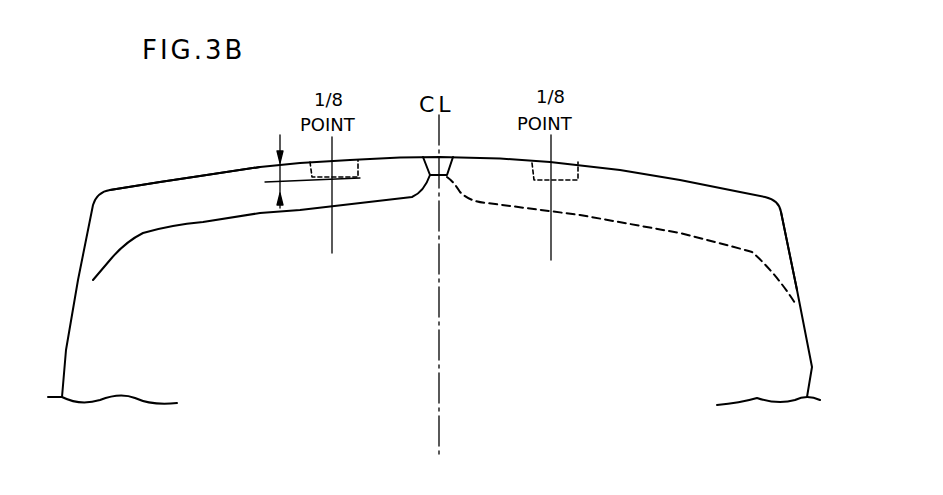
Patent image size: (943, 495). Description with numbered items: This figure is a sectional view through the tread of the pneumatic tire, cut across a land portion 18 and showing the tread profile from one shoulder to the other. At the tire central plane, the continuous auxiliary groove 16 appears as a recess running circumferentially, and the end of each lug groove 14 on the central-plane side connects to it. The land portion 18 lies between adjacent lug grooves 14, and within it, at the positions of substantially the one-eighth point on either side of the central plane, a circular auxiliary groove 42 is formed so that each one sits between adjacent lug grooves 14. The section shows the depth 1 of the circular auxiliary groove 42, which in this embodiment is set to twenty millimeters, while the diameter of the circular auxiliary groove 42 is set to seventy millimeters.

The lug groove 14 is at (203, 222).
The continuous auxiliary groove 16 is at (428, 157).
The land portion 18 is at (787, 227).
The circular auxiliary groove 42 is at (565, 163).
The depth of the circular auxiliary groove 1 is at (273, 170).